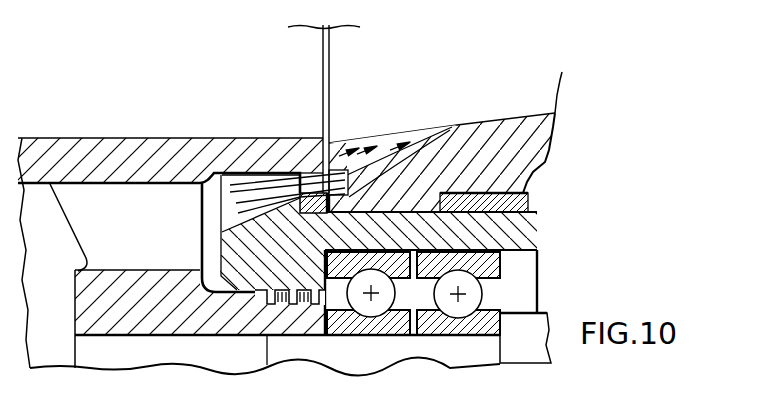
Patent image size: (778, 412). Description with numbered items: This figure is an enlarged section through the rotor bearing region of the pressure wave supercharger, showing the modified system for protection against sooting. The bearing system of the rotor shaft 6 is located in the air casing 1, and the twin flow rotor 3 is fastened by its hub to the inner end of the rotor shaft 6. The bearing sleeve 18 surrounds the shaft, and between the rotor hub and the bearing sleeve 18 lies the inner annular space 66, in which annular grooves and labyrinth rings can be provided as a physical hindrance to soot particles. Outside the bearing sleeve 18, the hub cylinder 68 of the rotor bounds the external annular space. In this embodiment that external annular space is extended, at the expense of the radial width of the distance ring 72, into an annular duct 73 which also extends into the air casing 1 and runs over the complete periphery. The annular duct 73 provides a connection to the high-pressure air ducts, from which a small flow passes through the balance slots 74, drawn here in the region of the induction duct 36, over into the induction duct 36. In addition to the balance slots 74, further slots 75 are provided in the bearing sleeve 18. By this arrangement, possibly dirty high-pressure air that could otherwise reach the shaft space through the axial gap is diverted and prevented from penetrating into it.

The air casing 1 is at (515, 143).
The twin flow rotor 3 is at (226, 123).
The rotor shaft 6 is at (523, 328).
The bearing sleeve 18 is at (218, 203).
The induction duct 36 is at (374, 65).
The inner annular space 66 is at (255, 291).
The hub cylinder 68 is at (75, 163).
The distance ring 72 is at (310, 198).
The annular duct 73 is at (343, 168).
The balance slot 74 is at (383, 148).
The slot in bearing sleeve 75 is at (242, 193).